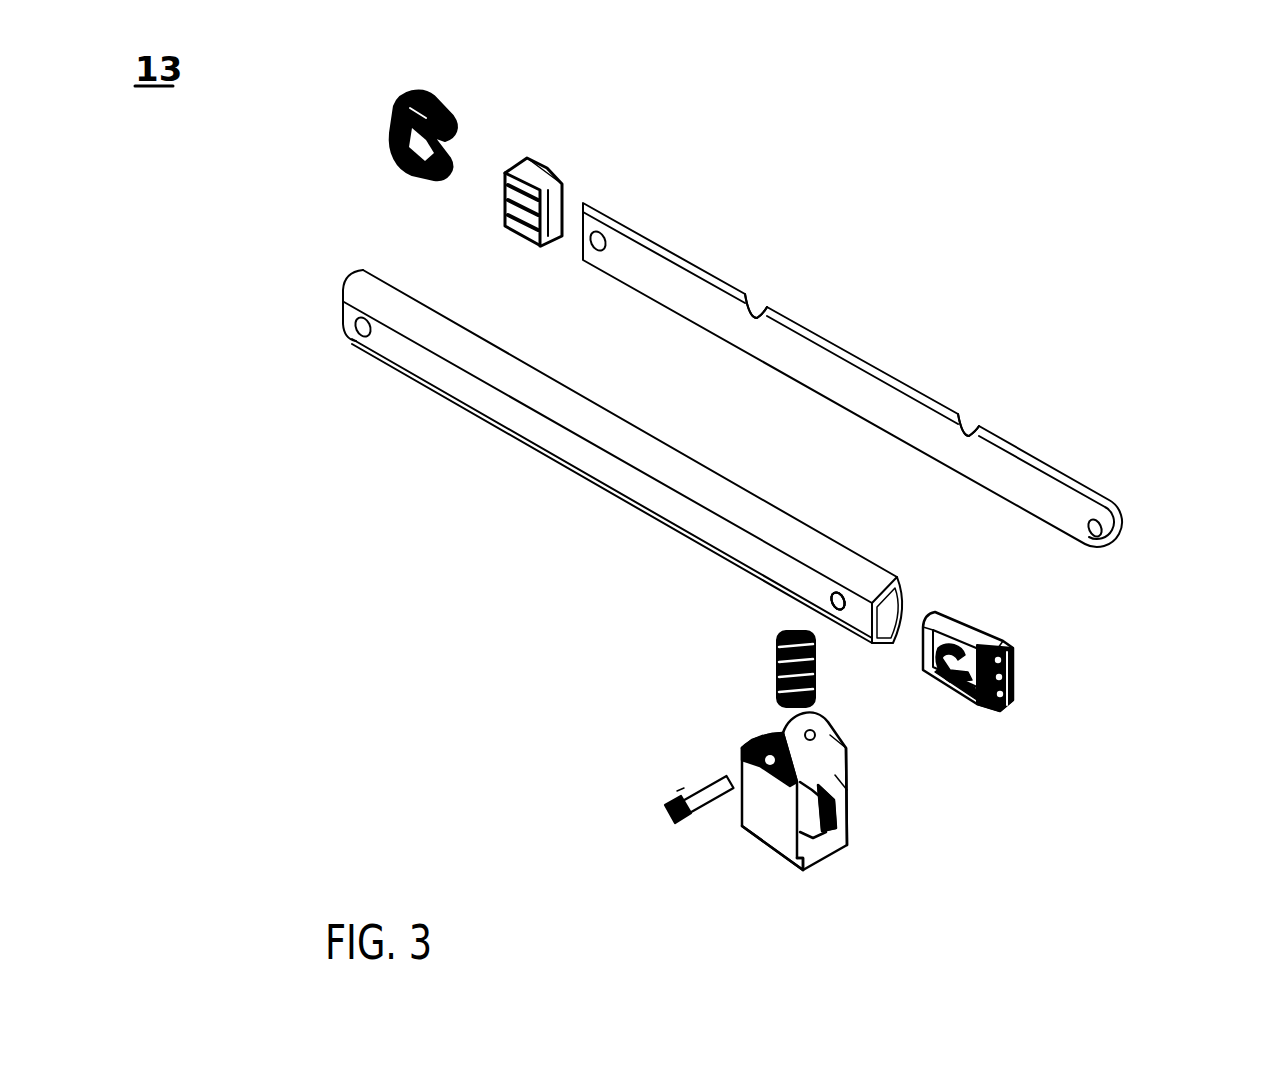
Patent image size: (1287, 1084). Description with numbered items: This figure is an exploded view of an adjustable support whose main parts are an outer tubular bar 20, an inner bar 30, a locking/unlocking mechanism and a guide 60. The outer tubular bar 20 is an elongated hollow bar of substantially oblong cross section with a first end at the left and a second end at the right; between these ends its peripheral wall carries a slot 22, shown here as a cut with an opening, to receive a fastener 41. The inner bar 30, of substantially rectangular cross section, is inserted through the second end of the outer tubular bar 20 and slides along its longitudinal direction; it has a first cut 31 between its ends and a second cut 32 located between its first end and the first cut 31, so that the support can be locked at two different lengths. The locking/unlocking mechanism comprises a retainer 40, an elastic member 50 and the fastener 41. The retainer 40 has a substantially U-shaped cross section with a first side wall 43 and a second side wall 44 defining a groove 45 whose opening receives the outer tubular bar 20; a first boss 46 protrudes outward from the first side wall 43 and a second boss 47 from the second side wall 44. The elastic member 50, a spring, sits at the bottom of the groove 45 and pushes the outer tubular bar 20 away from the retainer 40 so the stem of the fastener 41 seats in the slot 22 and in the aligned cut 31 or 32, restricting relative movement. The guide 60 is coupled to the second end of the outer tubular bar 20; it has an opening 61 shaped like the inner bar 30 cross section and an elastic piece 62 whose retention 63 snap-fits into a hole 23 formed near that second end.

The outer tubular bar 20 is at (458, 347).
The slot 22 is at (786, 540).
The hole 23 is at (900, 597).
The inner bar 30 is at (643, 262).
The first cut 31 is at (968, 428).
The second cut 32 is at (767, 313).
The retainer 40 is at (813, 823).
The fastener 41 is at (692, 796).
The first side wall 43 is at (773, 800).
The second side wall 44 is at (847, 768).
The groove 45 is at (852, 804).
The first boss 46 is at (760, 773).
The second boss 47 is at (843, 723).
The elastic member 50 is at (776, 657).
The guide 60 is at (1095, 654).
The opening 61 is at (1015, 672).
The elastic piece 62 is at (965, 702).
The retention 63 is at (1012, 645).